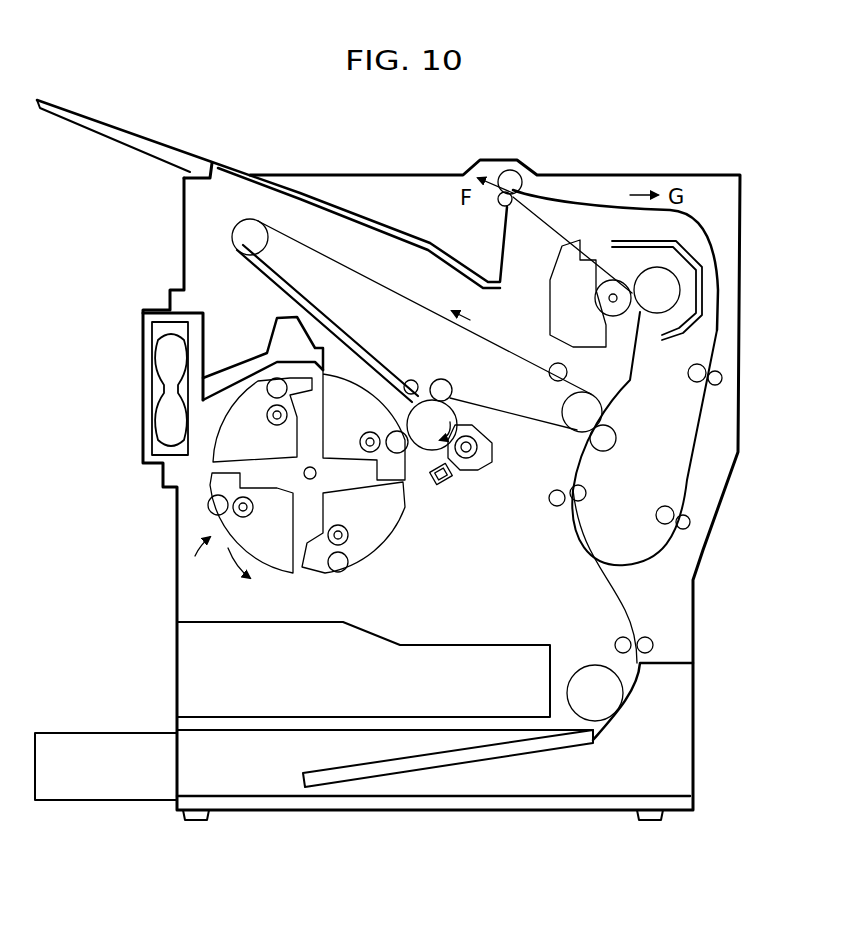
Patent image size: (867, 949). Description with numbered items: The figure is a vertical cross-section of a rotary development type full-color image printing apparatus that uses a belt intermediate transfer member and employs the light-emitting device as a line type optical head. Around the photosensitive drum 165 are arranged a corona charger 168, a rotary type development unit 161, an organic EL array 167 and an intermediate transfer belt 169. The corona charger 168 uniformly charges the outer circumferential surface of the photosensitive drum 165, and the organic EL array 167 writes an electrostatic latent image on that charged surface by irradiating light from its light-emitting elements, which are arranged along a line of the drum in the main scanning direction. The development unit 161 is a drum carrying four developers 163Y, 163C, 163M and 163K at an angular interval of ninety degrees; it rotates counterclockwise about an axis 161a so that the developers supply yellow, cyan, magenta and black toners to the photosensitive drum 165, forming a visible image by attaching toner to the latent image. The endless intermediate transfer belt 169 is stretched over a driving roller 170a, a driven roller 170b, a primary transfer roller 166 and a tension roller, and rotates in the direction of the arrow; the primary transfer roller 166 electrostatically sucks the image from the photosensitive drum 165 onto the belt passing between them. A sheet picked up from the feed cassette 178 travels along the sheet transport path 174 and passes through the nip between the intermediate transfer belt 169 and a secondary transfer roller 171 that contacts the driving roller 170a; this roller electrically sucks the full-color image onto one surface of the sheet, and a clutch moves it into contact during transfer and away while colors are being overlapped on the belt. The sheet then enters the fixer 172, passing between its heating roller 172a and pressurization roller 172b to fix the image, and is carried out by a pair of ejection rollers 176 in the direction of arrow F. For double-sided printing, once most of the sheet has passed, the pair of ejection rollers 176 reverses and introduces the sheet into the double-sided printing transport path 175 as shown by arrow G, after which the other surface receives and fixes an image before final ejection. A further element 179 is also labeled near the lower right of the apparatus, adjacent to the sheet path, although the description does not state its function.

The rotary type development unit 161 is at (200, 557).
The axis 161a is at (304, 473).
The yellow developer 163Y is at (352, 395).
The magenta developer 163M is at (283, 567).
The cyan developer 163C is at (377, 528).
The black developer 163K is at (222, 458).
The photosensitive drum 165 is at (460, 418).
The primary transfer roller 166 is at (452, 386).
The organic EL array 167 is at (440, 484).
The corona charger 168 is at (480, 452).
The intermediate transfer belt 169 is at (319, 243).
The driving roller 170a is at (595, 410).
The driven roller 170b is at (243, 235).
The secondary transfer roller 171 is at (608, 436).
The fixer 172 is at (548, 276).
The heating roller 172a is at (672, 286).
The pressurization roller 172b is at (688, 252).
The sheet transport path 174 is at (574, 202).
The double-sided printing transport path 175 is at (718, 327).
The pair of ejection rollers 176 is at (515, 178).
The feed cassette 178 is at (548, 750).
The fixing roller 179 is at (612, 703).